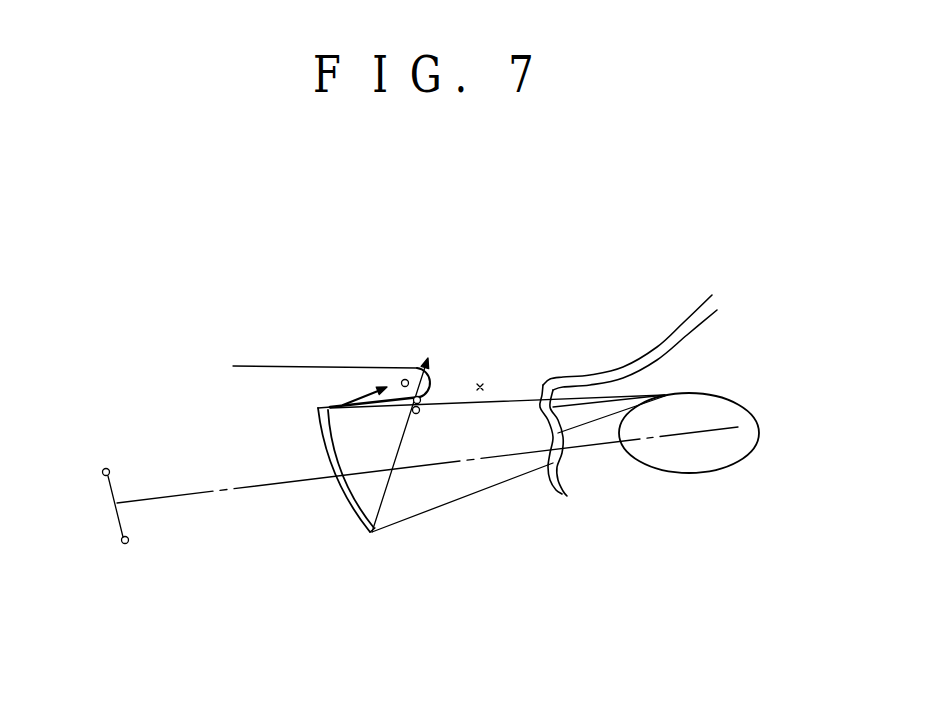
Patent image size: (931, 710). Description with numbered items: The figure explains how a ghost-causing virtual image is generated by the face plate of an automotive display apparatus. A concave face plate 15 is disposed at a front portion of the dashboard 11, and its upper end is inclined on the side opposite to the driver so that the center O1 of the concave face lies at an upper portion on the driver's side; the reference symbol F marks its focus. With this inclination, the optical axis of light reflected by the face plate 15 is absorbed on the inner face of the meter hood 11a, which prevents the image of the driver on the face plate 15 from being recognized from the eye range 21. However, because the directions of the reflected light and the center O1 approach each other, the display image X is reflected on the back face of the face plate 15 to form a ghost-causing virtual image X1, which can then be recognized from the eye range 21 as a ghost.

The dashboard 11 is at (349, 346).
The meter hood 11a is at (413, 375).
The ghost-causing virtual image X1 is at (404, 372).
The focus F is at (481, 385).
The concave face plate 15 is at (358, 515).
The display image X is at (117, 523).
The center of the concave face O1 is at (650, 325).
The eye range 21 is at (730, 397).